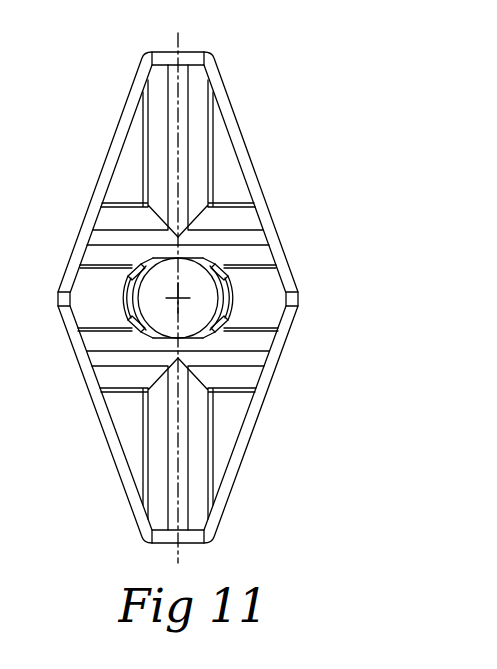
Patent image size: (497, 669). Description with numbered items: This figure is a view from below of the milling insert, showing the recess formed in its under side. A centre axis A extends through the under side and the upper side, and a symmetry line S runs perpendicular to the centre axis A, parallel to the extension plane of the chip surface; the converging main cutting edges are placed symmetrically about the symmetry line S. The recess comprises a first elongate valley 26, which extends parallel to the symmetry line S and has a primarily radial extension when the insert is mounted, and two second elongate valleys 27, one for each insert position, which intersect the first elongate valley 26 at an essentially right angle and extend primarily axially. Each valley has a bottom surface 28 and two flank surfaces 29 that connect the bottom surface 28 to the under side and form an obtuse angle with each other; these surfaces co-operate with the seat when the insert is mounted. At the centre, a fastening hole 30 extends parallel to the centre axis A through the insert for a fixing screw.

The symmetry line S is at (178, 43).
The first elongate valley 26 is at (175, 480).
The second elongate valley 27 is at (243, 238).
The bottom surface 28 is at (183, 93).
The flank surface 29 is at (162, 140).
The fastening hole 30 is at (158, 310).
The centre axis A is at (179, 296).